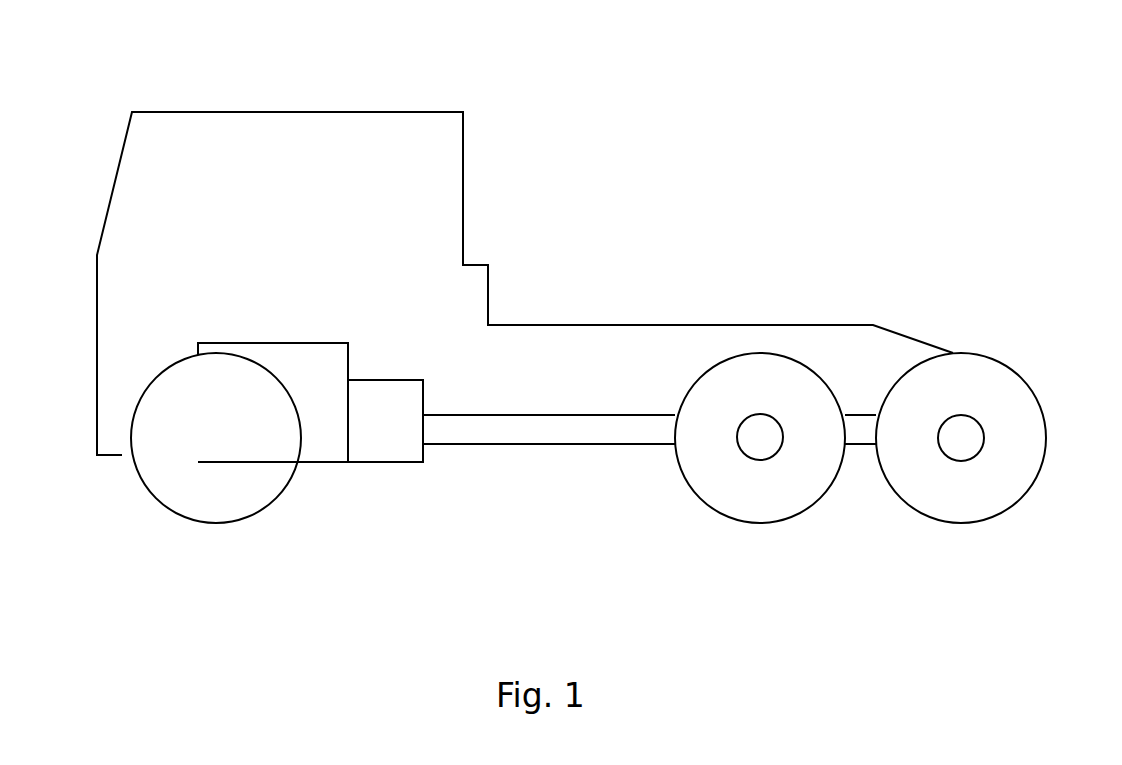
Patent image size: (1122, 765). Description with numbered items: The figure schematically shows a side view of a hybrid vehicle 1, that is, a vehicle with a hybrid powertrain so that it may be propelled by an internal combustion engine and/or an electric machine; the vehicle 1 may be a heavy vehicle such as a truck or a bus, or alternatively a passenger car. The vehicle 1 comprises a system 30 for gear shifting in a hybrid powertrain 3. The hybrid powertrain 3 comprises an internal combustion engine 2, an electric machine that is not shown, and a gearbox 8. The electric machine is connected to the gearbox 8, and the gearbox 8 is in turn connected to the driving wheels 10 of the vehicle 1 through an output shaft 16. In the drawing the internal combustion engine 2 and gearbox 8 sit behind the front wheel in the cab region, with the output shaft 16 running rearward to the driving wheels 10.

The hybrid vehicle 1 is at (568, 95).
The internal combustion engine 2 is at (243, 342).
The hybrid powertrain 3 is at (402, 548).
The gearbox 8 is at (408, 463).
The driving wheels 10 is at (807, 510).
The output shaft 16 is at (523, 447).
The system for gear shifting 30 is at (337, 498).